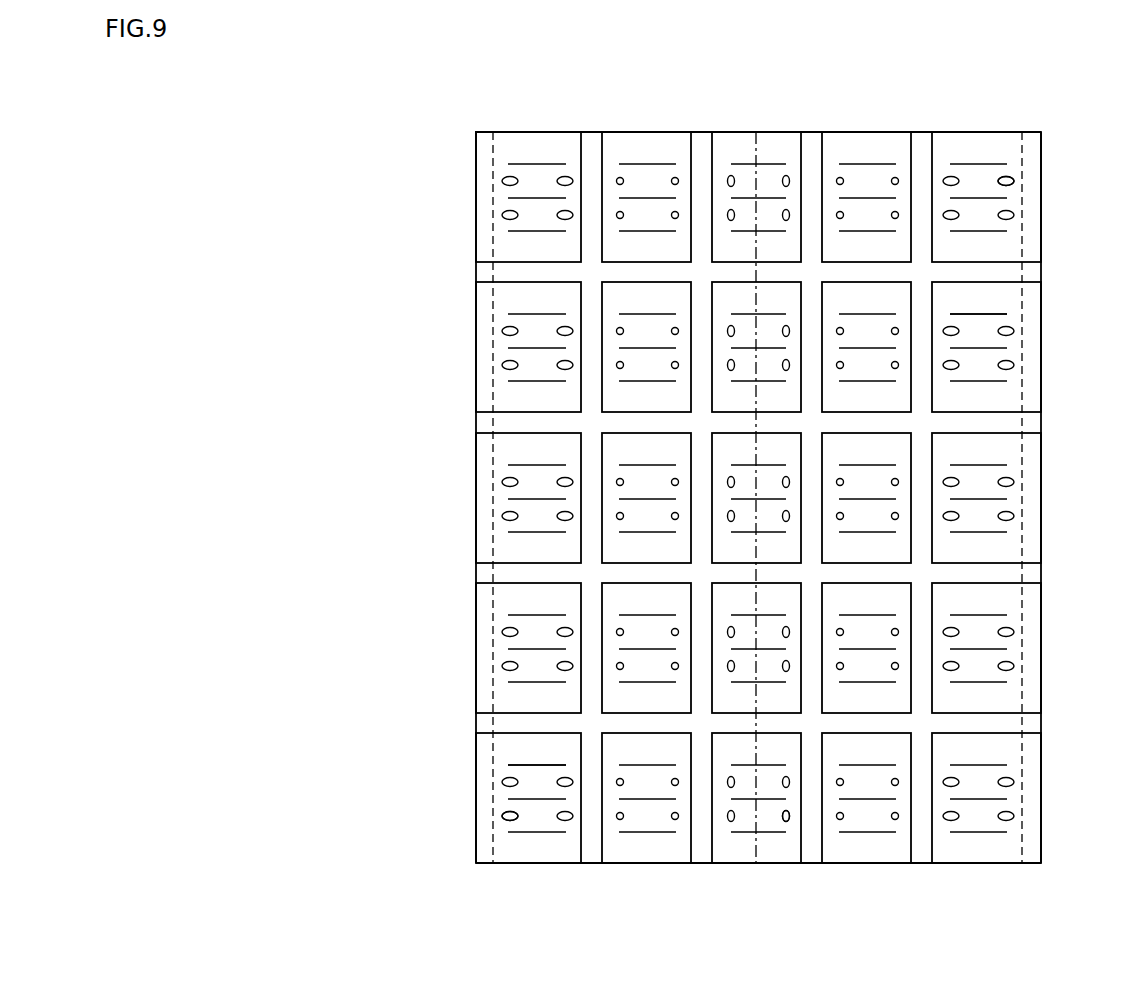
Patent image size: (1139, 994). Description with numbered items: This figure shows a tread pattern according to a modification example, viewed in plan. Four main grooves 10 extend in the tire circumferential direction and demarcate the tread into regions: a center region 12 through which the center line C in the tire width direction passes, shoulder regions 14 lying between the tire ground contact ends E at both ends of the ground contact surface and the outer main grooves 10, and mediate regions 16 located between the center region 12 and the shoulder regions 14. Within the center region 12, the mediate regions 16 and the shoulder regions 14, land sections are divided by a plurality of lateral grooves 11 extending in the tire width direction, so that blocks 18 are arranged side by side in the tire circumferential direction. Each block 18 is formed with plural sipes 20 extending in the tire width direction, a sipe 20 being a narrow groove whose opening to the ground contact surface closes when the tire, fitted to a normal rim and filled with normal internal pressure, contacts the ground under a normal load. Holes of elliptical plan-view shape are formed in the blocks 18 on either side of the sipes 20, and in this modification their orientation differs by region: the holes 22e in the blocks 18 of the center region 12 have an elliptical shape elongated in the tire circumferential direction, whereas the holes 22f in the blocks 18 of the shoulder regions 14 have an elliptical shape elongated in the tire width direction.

The main groove 10 is at (590, 167).
The lateral groove 11 is at (983, 272).
The center region 12 is at (735, 850).
The shoulder region 14 is at (535, 850).
The mediate region 16 is at (650, 850).
The block 18 is at (765, 535).
The sipe 20 is at (535, 765).
The hole 22e is at (786, 820).
The hole 22f is at (1005, 181).
The tire ground contact end E is at (495, 152).
The center line in tire width direction C is at (757, 150).